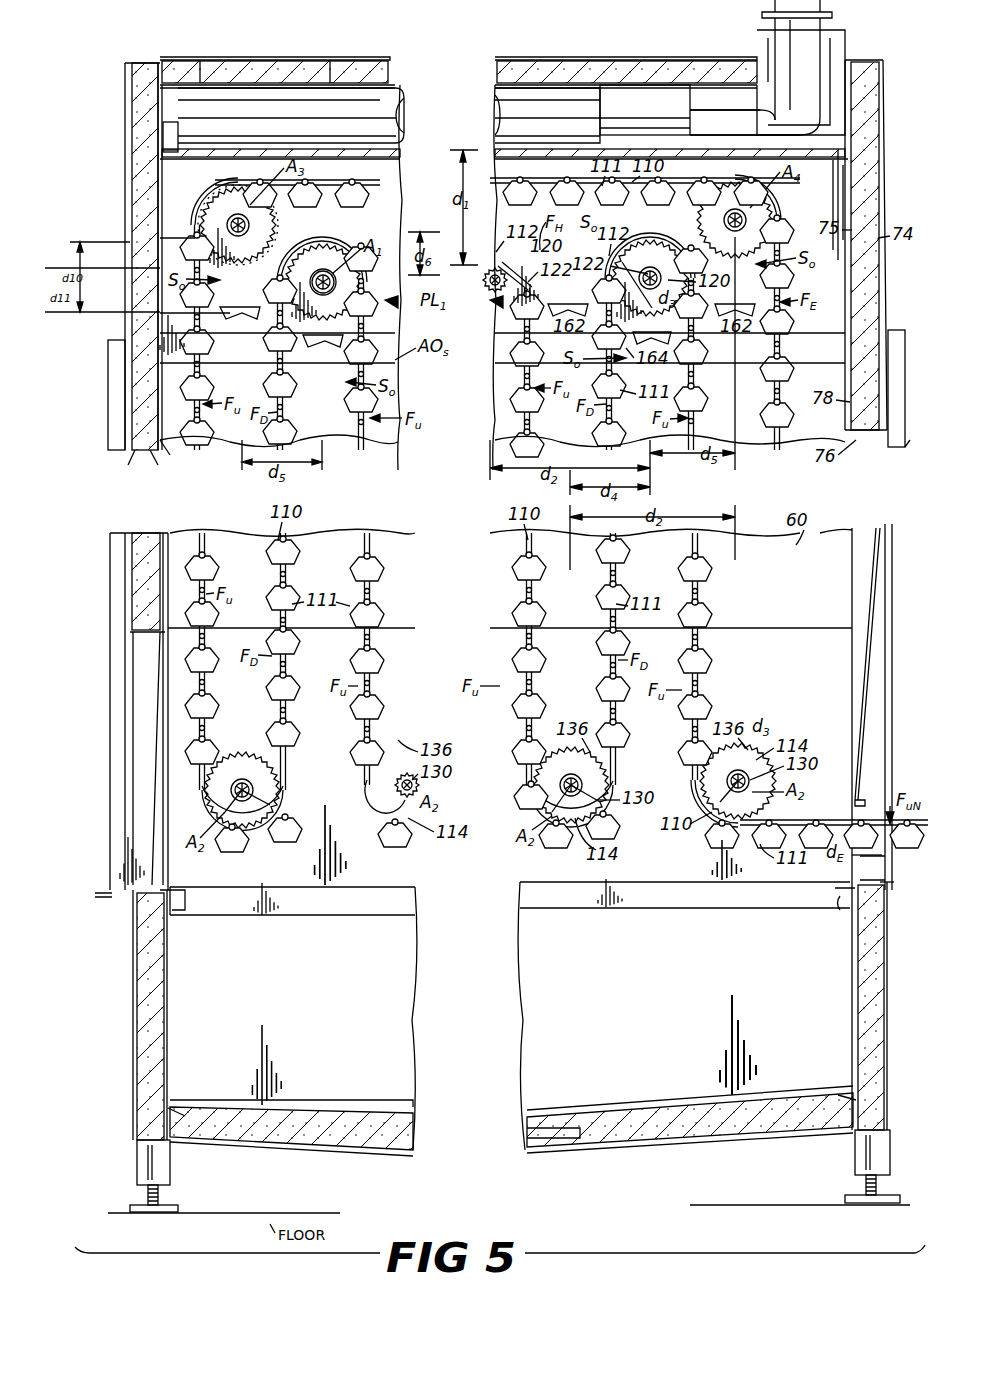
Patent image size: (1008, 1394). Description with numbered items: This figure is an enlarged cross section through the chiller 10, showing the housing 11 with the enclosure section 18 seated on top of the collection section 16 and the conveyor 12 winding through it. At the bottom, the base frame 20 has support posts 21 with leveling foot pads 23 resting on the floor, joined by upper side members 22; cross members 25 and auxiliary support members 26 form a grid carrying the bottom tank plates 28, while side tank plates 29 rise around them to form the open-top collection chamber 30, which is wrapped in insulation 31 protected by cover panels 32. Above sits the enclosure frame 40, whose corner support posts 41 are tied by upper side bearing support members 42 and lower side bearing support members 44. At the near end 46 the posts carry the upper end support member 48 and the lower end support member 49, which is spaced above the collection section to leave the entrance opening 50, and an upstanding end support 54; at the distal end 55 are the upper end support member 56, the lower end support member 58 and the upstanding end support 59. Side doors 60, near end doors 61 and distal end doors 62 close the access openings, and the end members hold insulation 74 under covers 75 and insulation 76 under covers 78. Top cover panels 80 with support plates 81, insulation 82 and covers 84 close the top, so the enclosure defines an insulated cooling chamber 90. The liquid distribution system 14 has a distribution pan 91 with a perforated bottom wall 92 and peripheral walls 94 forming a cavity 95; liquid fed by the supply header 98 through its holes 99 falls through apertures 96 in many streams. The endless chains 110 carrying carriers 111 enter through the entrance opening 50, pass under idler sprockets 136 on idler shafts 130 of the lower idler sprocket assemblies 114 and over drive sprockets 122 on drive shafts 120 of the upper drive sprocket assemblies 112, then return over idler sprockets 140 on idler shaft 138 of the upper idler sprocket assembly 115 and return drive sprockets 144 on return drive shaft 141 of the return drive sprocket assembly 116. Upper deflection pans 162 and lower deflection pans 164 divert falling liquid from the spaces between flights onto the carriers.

The chiller 10 is at (122, 44).
The housing 11 is at (108, 905).
The conveyor 12 is at (790, 814).
The liquid distribution system 14 is at (760, 24).
The collection section 16 is at (880, 972).
The enclosure section 18 is at (123, 90).
The base frame 20 is at (130, 1150).
The support posts 21 is at (170, 1164).
The upper side members 22 is at (180, 912).
The leveling foot pads 23 is at (170, 1208).
The cross members 25 is at (190, 1108).
The auxiliary support members 26 is at (512, 1124).
The bottom tank plates 28 is at (338, 1110).
The side tank plates 29 is at (170, 1008).
The collection chamber 30 is at (668, 874).
The insulation 31 is at (140, 1072).
The cover panels 32 is at (136, 1050).
The enclosure frame 40 is at (160, 827).
The corner support posts 41 is at (160, 753).
The upper side bearing support members 42 is at (380, 172).
The lower side bearing support members 44 is at (772, 628).
The near end 46 is at (880, 716).
The upper end support member 48 is at (880, 205).
The lower end support member 49 is at (860, 670).
The entrance opening 50 is at (878, 857).
The upstanding end support 54 is at (878, 440).
The distal end 55 is at (110, 638).
The upper end support member 56 is at (128, 212).
The lower end support member 58 is at (160, 684).
The upstanding end support 59 is at (131, 469).
The side doors 60 is at (318, 542).
The near end doors 61 is at (905, 450).
The distal end doors 62 is at (112, 423).
The insulation 74 is at (148, 278).
The covers 75 is at (158, 250).
The insulation 76 is at (164, 469).
The covers 78 is at (176, 456).
The top cover panels 80 is at (270, 52).
The support plate 81 is at (222, 62).
The insulation 82 is at (345, 62).
The covers 84 is at (385, 76).
The cooling chamber 90 is at (160, 180).
The liquid distribution pan 91 is at (402, 140).
The perforated bottom wall 92 is at (380, 124).
The peripheral walls 94 is at (176, 135).
The liquid distribution cavity 95 is at (810, 120).
The apertures 96 is at (700, 142).
The supply header 98 is at (405, 108).
The holes 99 is at (648, 135).
The endless chains 110 is at (279, 314).
The carriers 111 is at (296, 391).
The upper drive sprocket assemblies 112 is at (333, 246).
The lower idler sprocket assemblies 114 is at (280, 812).
The upper idler sprocket assembly 115 is at (240, 185).
The return drive sprocket assembly 116 is at (738, 182).
The drive shaft 120 is at (306, 282).
The drive sprockets 122 is at (316, 298).
The idler shaft 130 is at (250, 820).
The idler sprockets 136 is at (262, 750).
The idler shaft 138 is at (260, 222).
The idler sprockets 140 is at (268, 235).
The return drive shaft 141 is at (722, 220).
The return drive sprockets 144 is at (778, 212).
The upper deflection pans 162 is at (210, 323).
The lower deflection pans 164 is at (325, 348).